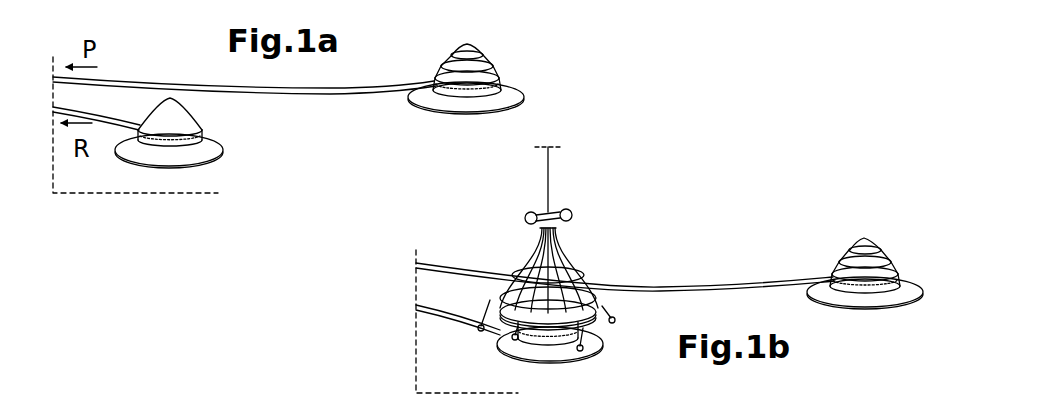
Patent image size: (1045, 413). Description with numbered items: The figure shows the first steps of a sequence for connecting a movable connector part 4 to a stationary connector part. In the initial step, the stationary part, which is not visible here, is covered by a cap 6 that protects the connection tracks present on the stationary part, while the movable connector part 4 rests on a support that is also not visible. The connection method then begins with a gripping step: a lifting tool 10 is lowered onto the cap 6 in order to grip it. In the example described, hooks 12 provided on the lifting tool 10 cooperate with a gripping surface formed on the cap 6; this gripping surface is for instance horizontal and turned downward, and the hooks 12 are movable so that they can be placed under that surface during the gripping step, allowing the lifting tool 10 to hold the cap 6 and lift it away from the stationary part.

In FIG. 1A, the movable connector part 4 is at (489, 47).
In FIG. 1B, the movable connector part 4 is at (851, 245).
In FIG. 1A, the cap 6 is at (200, 113).
In FIG. 1B, the cap 6 is at (547, 328).
In FIG. 1B, the lifting tool 10 is at (594, 265).
In FIG. 1B, the hooks 12 is at (510, 334).